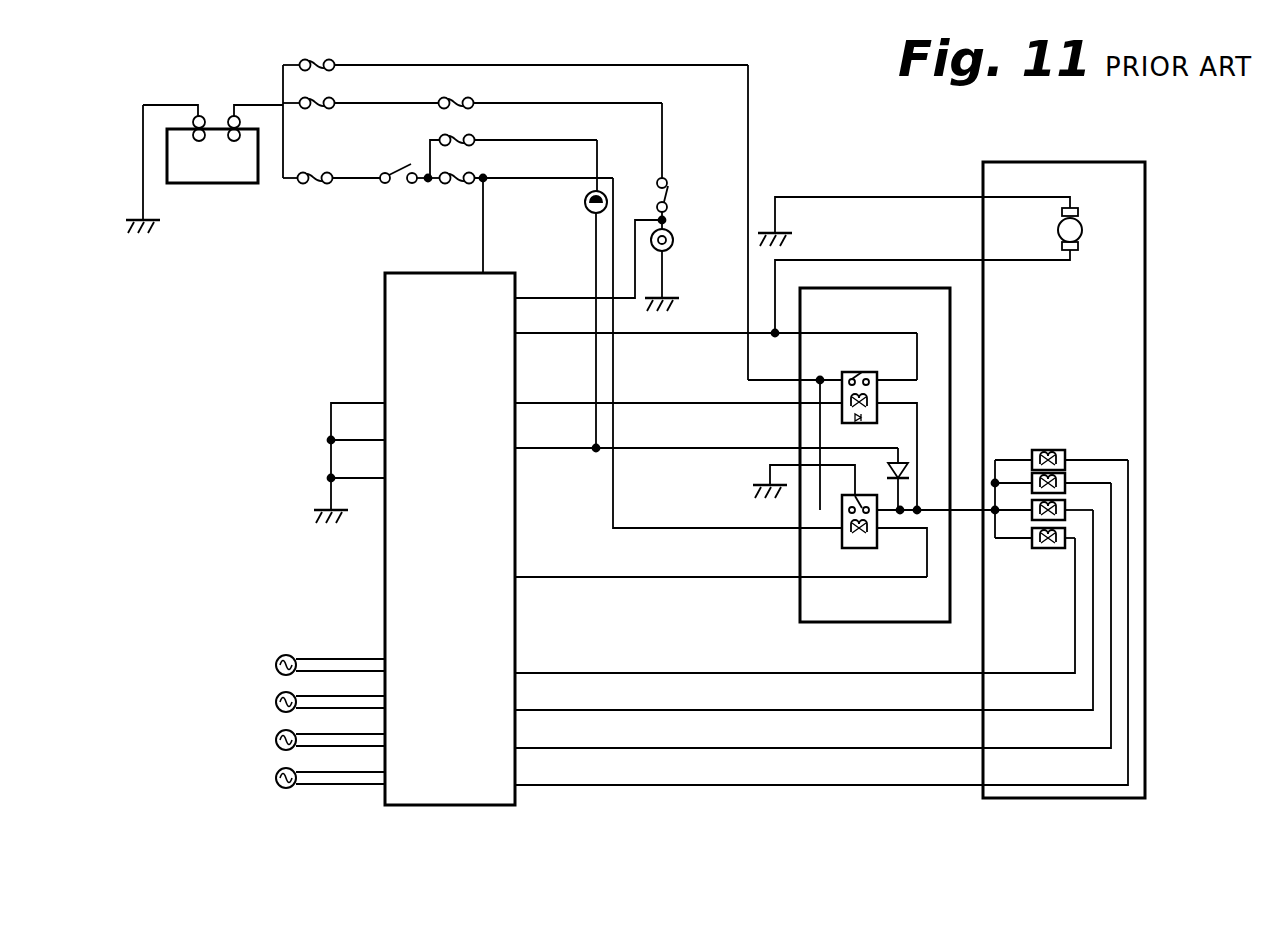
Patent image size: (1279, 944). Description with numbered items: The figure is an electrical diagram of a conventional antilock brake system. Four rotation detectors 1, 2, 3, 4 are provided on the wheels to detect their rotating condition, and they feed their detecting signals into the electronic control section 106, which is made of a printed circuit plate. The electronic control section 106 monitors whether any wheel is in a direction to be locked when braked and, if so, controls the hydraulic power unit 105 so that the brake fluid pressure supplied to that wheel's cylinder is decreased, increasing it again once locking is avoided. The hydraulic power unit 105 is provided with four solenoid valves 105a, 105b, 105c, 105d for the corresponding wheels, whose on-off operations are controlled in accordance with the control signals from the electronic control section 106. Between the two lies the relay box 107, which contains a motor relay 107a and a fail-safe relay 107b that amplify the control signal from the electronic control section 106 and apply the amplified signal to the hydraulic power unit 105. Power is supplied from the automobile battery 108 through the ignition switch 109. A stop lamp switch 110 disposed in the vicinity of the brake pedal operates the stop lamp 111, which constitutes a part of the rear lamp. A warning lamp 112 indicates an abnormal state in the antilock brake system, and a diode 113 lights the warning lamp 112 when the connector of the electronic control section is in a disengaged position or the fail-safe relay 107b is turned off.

The rotation detector 1 is at (276, 660).
The rotation detector 2 is at (276, 697).
The rotation detector 3 is at (276, 740).
The rotation detector 4 is at (276, 778).
The hydraulic power unit 105 is at (1116, 480).
The solenoid valve 105a is at (1065, 452).
The solenoid valve 105b is at (1065, 479).
The solenoid valve 105c is at (1065, 507).
The solenoid valve 105d is at (1065, 530).
The electronic control section 106 is at (516, 800).
The relay box 107 is at (832, 288).
The motor relay 107a is at (857, 372).
The fail-safe relay 107b is at (857, 549).
The battery 108 is at (213, 185).
The ignition switch 109 is at (385, 184).
The stop lamp switch 110 is at (669, 197).
The stop lamp 111 is at (674, 242).
The warning lamp 112 is at (585, 203).
The diode 113 is at (886, 470).